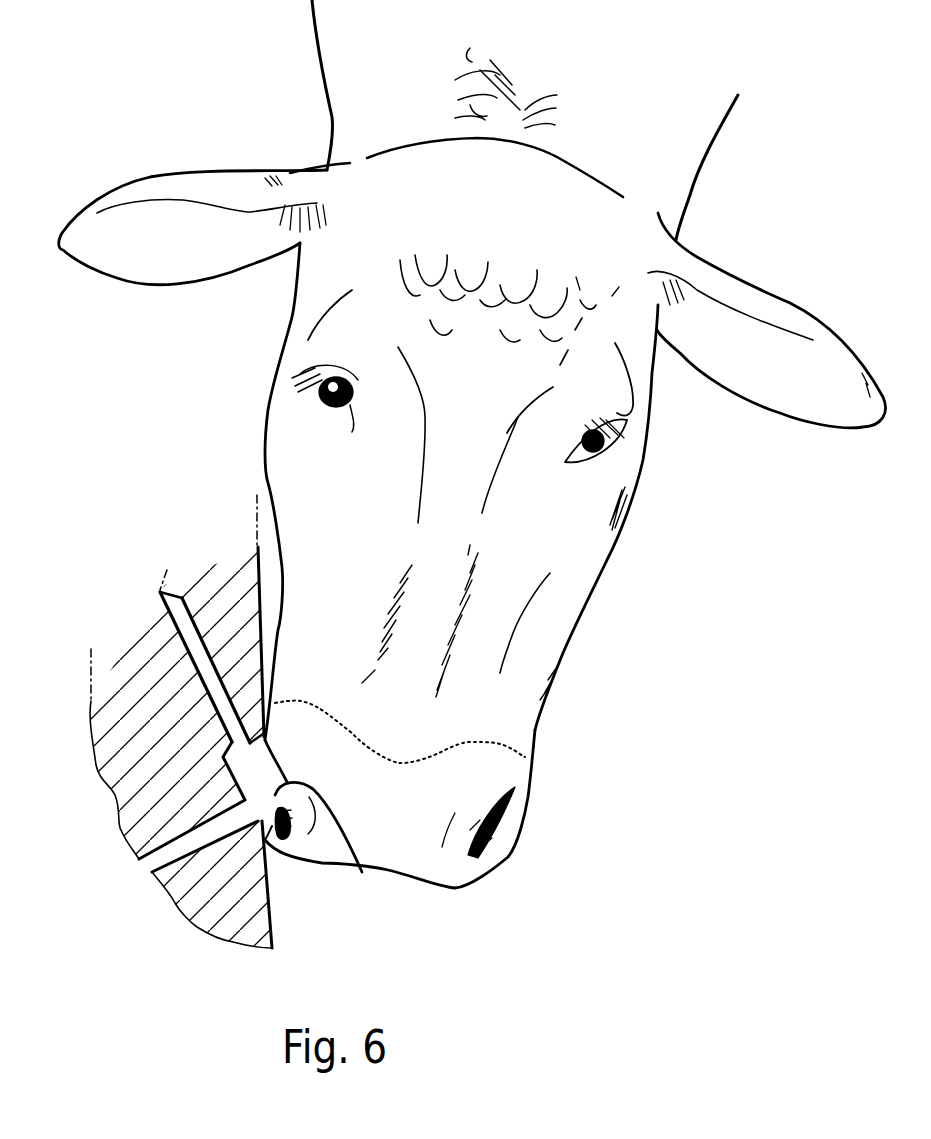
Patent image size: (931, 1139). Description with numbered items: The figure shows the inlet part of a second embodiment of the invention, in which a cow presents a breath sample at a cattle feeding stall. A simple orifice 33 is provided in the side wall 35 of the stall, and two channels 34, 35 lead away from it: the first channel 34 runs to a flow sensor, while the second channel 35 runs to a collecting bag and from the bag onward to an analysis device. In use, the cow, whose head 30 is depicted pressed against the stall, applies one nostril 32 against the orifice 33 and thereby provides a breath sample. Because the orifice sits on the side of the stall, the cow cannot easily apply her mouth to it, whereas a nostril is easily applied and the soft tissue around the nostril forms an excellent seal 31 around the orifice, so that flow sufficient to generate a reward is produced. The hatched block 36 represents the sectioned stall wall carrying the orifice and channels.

The head 30 is at (530, 643).
The seal 31 is at (256, 724).
The nostril 32 is at (335, 828).
The orifice 33 is at (244, 771).
The first channel 34 is at (182, 846).
The second channel 35 is at (185, 618).
The applicator body 36 is at (256, 517).